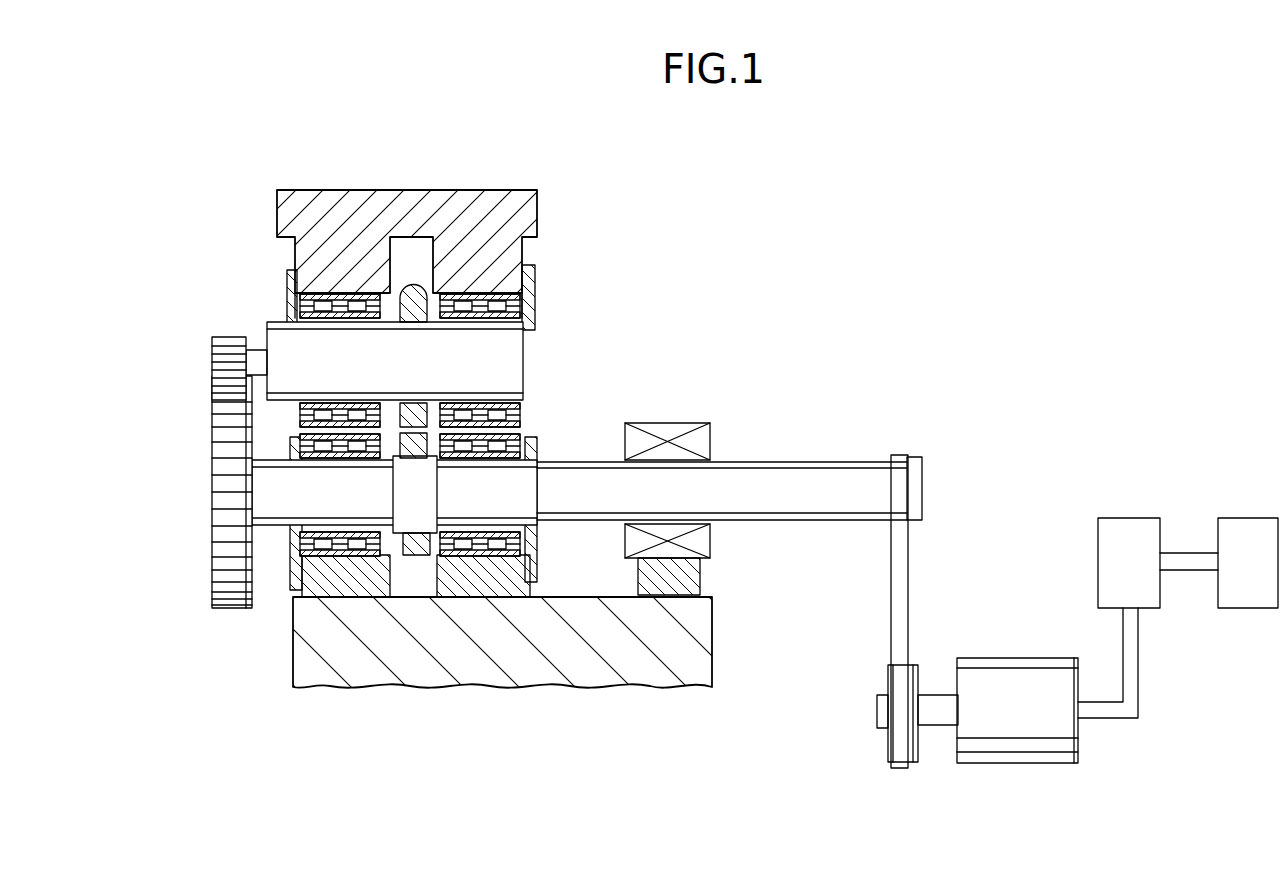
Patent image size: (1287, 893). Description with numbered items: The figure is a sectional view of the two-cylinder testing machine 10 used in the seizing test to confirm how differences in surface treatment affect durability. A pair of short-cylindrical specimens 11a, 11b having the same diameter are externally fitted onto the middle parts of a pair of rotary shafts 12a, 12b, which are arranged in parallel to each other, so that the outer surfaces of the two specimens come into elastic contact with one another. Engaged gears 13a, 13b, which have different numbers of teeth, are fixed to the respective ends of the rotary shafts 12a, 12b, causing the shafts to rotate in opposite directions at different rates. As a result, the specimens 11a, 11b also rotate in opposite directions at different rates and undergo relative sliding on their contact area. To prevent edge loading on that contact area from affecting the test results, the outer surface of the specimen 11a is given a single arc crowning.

The two-cylinder testing machine 10 is at (566, 291).
The short-cylindrical specimen 11a is at (413, 295).
The short-cylindrical specimen 11b is at (416, 556).
The rotary shaft 12a is at (510, 352).
The rotary shaft 12b is at (523, 487).
The gear 13a is at (220, 364).
The gear 13b is at (222, 490).